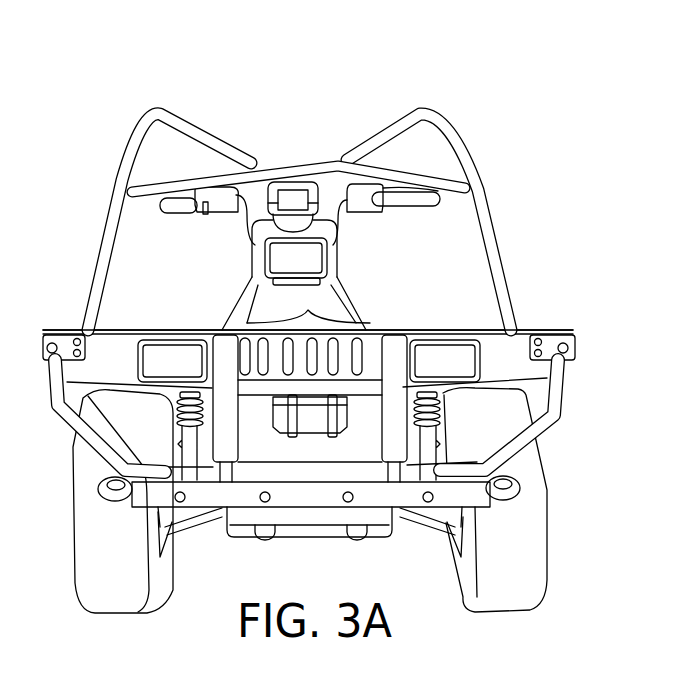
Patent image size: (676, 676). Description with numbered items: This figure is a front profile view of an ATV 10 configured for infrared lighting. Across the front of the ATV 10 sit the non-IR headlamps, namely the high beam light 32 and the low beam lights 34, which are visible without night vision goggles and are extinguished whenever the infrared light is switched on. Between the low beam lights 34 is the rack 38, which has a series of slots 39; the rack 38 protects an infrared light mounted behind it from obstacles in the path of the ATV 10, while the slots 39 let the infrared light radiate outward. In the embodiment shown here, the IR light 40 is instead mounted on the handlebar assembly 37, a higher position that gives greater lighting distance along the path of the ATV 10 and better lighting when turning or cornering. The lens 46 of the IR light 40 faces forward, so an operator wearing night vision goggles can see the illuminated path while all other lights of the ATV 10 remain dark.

The ATV 10 is at (325, 324).
The high beam light 32 is at (308, 272).
The low beam lights 34 is at (183, 373).
The handlebar assembly 37 is at (257, 248).
The rack 38 is at (343, 378).
The slots 39 is at (308, 304).
The IR light 40 is at (309, 181).
The lens 46 is at (288, 196).